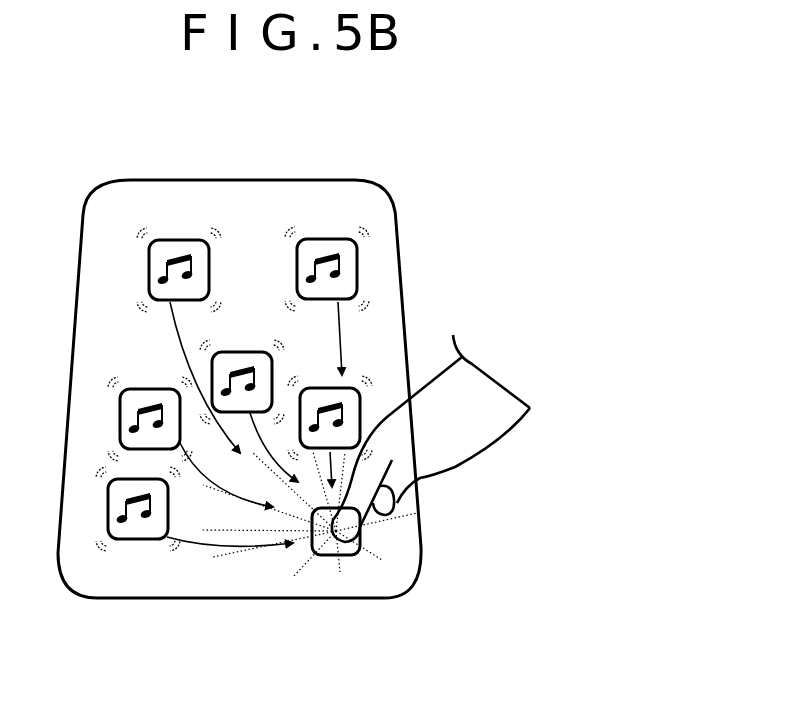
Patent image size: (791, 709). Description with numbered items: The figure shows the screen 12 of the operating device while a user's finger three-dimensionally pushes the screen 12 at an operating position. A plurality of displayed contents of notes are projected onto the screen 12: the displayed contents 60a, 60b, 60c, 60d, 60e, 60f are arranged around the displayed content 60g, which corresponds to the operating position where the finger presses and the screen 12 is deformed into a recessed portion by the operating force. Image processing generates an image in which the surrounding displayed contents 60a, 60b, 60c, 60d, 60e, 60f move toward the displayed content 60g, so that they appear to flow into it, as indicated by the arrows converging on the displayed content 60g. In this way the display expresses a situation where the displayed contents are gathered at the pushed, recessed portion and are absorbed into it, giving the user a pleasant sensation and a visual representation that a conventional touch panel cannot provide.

The screen 12 is at (308, 180).
The displayed content of note 60a is at (188, 241).
The displayed content of note 60b is at (330, 240).
The displayed content of note 60c is at (237, 351).
The displayed content of note 60d is at (157, 389).
The displayed content of note 60e is at (332, 387).
The displayed content of note 60f is at (126, 479).
The displayed content of note 60g is at (345, 557).